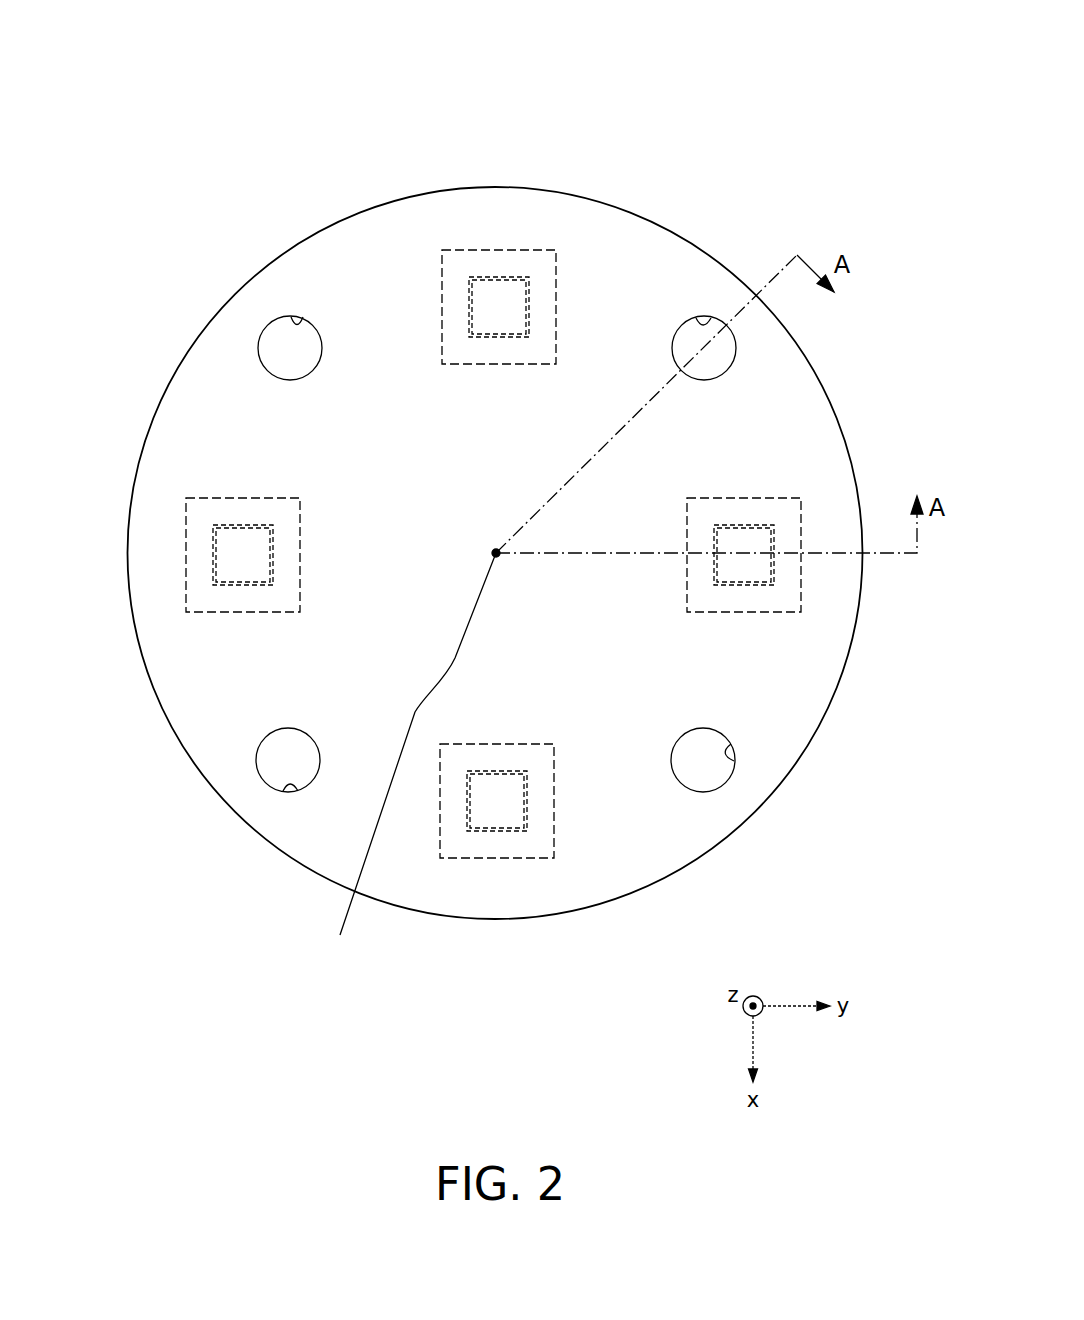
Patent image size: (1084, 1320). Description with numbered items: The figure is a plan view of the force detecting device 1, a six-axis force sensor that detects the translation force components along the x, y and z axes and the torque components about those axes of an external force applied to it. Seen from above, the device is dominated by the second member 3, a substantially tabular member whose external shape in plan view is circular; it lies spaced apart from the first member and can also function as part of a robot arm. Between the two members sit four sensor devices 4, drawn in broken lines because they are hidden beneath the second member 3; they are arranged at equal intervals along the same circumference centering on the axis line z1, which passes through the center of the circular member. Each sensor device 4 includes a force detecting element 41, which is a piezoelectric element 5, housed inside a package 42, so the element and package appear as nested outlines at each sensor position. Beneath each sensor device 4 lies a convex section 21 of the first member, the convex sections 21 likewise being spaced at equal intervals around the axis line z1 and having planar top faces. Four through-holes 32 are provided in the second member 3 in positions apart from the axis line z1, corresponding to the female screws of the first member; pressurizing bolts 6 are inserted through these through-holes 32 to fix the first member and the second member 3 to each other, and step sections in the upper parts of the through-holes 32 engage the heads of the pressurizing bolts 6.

The force detecting device 1 is at (718, 118).
The second member 3 is at (622, 240).
The sensor device 4 is at (500, 555).
The piezoelectric element 5 is at (512, 278).
The pressurizing bolt 6 is at (278, 338).
The convex section 21 is at (492, 278).
The through-hole 32 is at (302, 318).
The force detecting element 41 is at (500, 555).
The package 42 is at (463, 250).
The axis line z1 is at (414, 760).